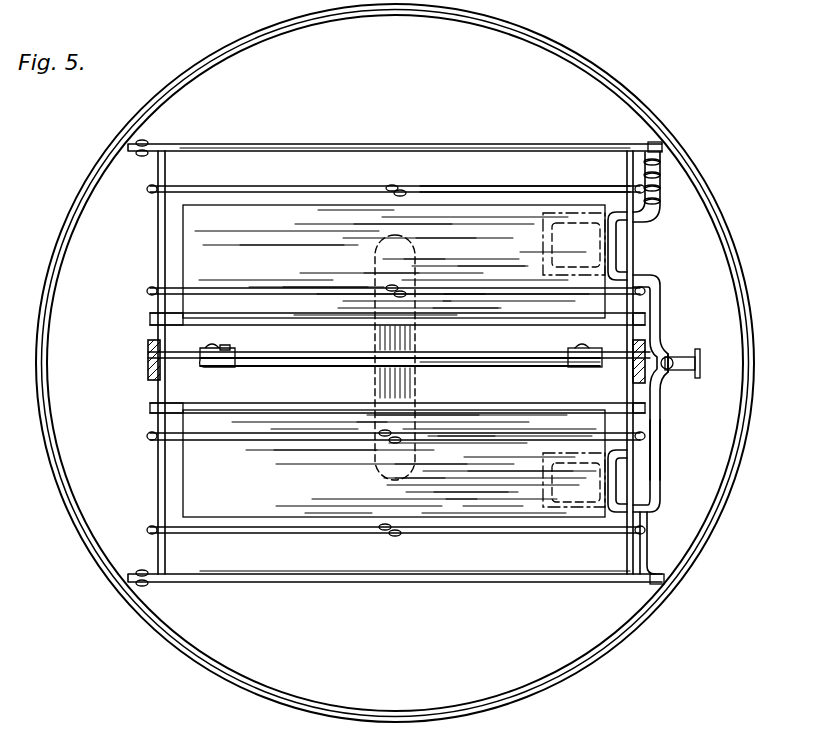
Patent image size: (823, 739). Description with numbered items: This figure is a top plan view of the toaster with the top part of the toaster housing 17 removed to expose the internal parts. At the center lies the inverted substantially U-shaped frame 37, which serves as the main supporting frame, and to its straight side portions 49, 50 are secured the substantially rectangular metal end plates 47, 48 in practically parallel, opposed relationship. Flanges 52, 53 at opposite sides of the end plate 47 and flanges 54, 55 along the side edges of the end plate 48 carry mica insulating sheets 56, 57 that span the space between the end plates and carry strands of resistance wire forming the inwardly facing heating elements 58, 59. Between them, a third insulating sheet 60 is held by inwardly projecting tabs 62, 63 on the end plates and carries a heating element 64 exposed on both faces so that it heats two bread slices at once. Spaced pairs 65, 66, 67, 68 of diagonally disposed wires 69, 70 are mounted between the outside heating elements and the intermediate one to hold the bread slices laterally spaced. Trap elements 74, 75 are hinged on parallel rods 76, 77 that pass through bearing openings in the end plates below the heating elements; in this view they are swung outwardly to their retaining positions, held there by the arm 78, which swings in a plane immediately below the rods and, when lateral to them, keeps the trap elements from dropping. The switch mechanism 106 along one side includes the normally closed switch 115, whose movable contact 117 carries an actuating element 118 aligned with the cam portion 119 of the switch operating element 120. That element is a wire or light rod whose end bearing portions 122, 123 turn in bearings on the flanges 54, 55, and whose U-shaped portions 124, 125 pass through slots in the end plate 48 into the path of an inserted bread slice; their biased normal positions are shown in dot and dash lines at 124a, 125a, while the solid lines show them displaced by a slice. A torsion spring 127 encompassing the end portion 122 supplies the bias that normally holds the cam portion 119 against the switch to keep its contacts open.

The toaster housing 17 is at (612, 82).
The frame 37 is at (148, 355).
The end plate 47 is at (158, 264).
The end plate 48 is at (634, 248).
The straight side portion 49 is at (148, 372).
The straight side portion 50 is at (642, 344).
The flange 52 is at (140, 152).
The flange 53 is at (138, 574).
The flange 54 is at (655, 144).
The flange 55 is at (664, 577).
The insulating sheet 56 is at (402, 144).
The insulating sheet 57 is at (400, 582).
The heating element 58 is at (305, 144).
The heating element 59 is at (492, 582).
The third insulating sheet 60 is at (265, 362).
The tab 62 is at (205, 358).
The tab 63 is at (592, 367).
The heating element 64 is at (448, 366).
The pair of wires 65 is at (402, 190).
The pair of wires 66 is at (402, 291).
The pair of wires 67 is at (398, 438).
The pair of wires 68 is at (398, 534).
The wire 69 is at (300, 189).
The wire 70 is at (498, 189).
The trap element 74 is at (196, 226).
The trap element 75 is at (196, 472).
The rod 76 is at (172, 311).
The rod 77 is at (172, 413).
The arm 78 is at (378, 344).
The switch mechanism 106 is at (665, 403).
The switch 115 is at (702, 365).
The movable contact 117 is at (700, 356).
The actuating element 118 is at (700, 372).
The cam portion 119 is at (666, 362).
The switch operating element 120 is at (662, 428).
The end bearing portion 122 is at (660, 172).
The end bearing portion 123 is at (665, 546).
The U-shaped portion 124 is at (618, 244).
The normal position of U-shaped portion 124a is at (545, 222).
The U-shaped portion 125 is at (618, 482).
The normal position of U-shaped portion 125a is at (545, 474).
The torsion spring 127 is at (660, 193).